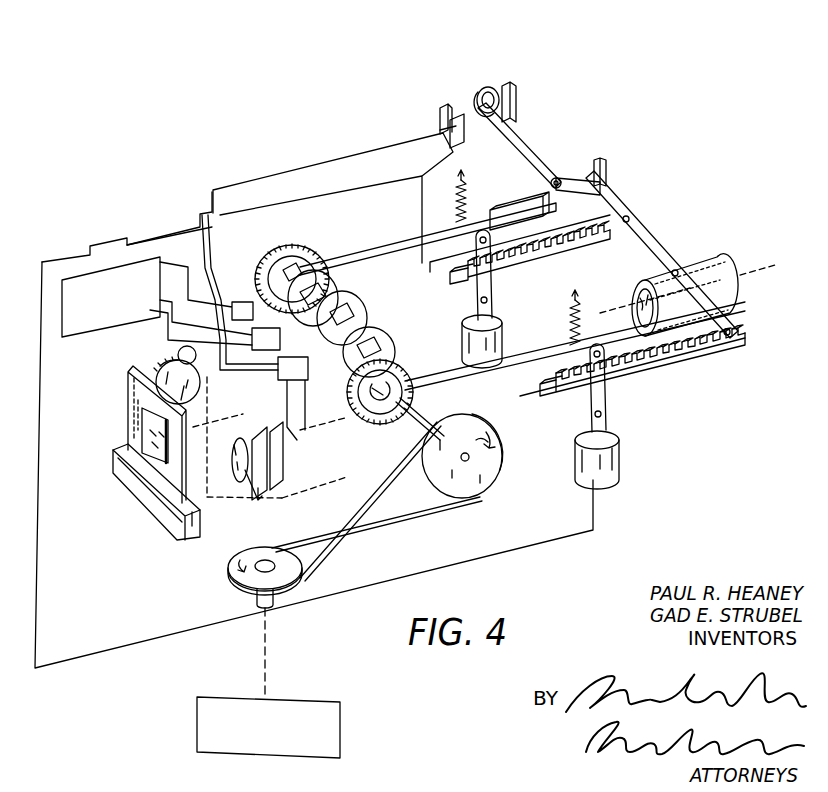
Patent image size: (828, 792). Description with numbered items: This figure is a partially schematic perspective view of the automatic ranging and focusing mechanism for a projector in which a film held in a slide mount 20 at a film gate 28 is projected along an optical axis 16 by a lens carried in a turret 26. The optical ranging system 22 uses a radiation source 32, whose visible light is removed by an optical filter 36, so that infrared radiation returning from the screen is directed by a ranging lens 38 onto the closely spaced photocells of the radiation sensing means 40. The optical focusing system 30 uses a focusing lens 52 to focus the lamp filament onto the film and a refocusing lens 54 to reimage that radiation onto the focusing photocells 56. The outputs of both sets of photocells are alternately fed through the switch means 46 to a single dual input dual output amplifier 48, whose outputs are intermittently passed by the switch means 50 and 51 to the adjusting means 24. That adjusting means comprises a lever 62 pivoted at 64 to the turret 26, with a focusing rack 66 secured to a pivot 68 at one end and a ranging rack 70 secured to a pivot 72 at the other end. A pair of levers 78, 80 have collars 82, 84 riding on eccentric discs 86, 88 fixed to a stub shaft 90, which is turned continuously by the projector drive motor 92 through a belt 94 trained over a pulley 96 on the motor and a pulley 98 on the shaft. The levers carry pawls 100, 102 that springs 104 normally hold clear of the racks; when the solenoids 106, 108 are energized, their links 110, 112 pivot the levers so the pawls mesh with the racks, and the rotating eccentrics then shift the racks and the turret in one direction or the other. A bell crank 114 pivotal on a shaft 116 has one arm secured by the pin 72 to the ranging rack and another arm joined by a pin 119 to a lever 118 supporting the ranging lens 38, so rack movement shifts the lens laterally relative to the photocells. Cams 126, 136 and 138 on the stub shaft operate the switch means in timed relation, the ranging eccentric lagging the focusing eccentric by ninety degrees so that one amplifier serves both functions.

The optical axis 16 is at (756, 282).
The slide mount 20 is at (138, 398).
The optical ranging system 22 is at (498, 72).
The adjusting means 24 is at (666, 220).
The turret 26 is at (730, 268).
The film gate 28 is at (116, 466).
The optical focusing system 30 is at (268, 425).
The radiation source 32 is at (172, 352).
The optical filter 36 is at (258, 497).
The ranging lens 38 is at (480, 90).
The radiation sensing means 40 is at (440, 120).
The switch means 46 is at (278, 375).
The amplifier 48 is at (105, 270).
The switch means 50 is at (240, 302).
The switch means 51 is at (280, 340).
The focusing lens 52 is at (152, 362).
The refocusing lens 54 is at (246, 447).
The focusing photocells 56 is at (290, 462).
The lever 62 is at (655, 250).
The pivot 64 is at (678, 271).
The focusing rack 66 is at (698, 362).
The pivot 68 is at (733, 327).
The ranging rack 70 is at (590, 244).
The pivot 72 is at (636, 211).
The lever 78 is at (362, 250).
The lever 80 is at (508, 356).
The collar 82 is at (292, 248).
The collar 84 is at (356, 405).
The eccentric disc 86 is at (266, 262).
The eccentric disc 88 is at (374, 423).
The stub shaft 90 is at (435, 408).
The projector drive motor 92 is at (328, 706).
The belt 94 is at (384, 520).
The pulley 96 is at (262, 562).
The pulley 98 is at (482, 486).
The pawl 100 is at (543, 222).
The pawl 102 is at (650, 360).
The spring 104 is at (464, 176).
The solenoid 106 is at (508, 322).
The solenoid 108 is at (622, 453).
The link 110 is at (494, 272).
The link 112 is at (556, 402).
The bell crank 114 is at (606, 196).
The shaft 116 is at (600, 160).
The lever 118 is at (525, 152).
The pin 119 is at (558, 177).
The cam 126 is at (395, 333).
The cam 136 is at (338, 282).
The cam 138 is at (367, 312).